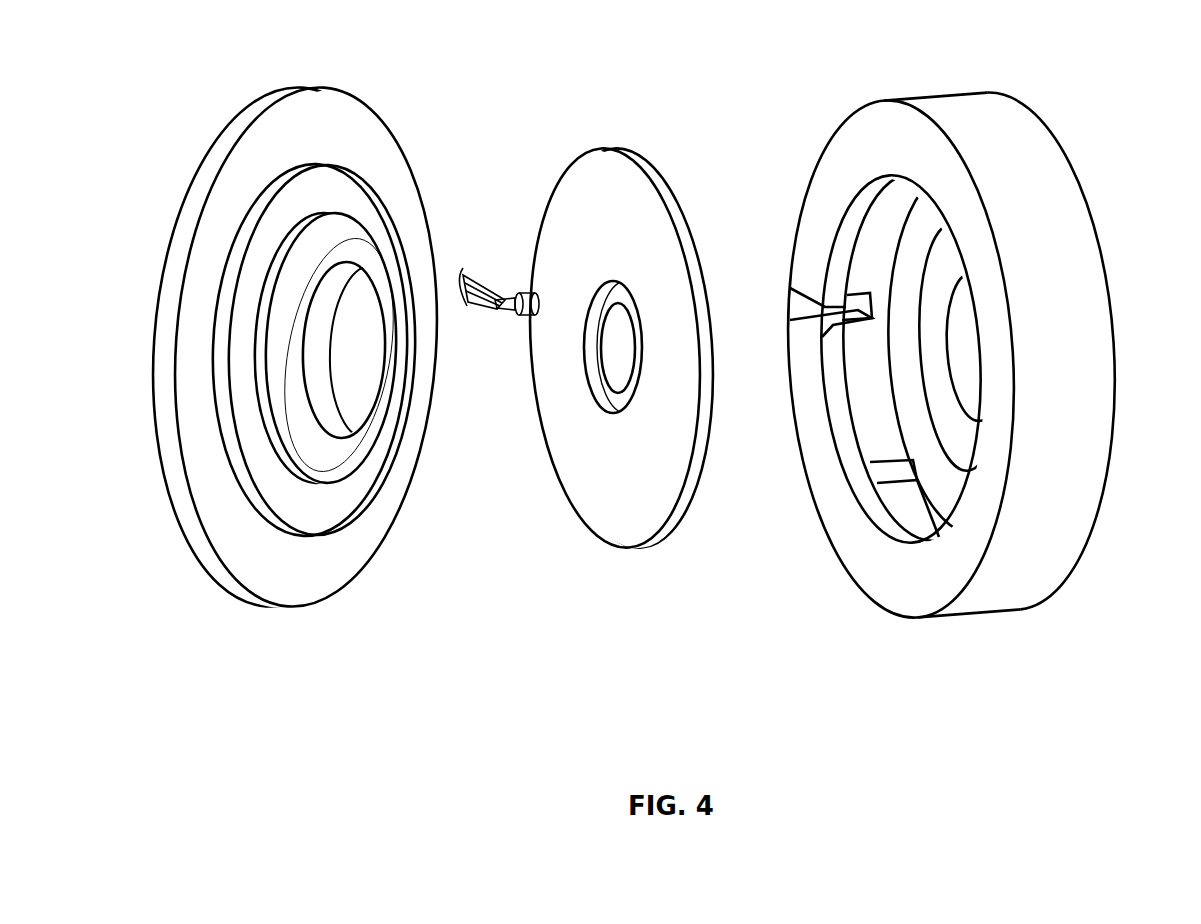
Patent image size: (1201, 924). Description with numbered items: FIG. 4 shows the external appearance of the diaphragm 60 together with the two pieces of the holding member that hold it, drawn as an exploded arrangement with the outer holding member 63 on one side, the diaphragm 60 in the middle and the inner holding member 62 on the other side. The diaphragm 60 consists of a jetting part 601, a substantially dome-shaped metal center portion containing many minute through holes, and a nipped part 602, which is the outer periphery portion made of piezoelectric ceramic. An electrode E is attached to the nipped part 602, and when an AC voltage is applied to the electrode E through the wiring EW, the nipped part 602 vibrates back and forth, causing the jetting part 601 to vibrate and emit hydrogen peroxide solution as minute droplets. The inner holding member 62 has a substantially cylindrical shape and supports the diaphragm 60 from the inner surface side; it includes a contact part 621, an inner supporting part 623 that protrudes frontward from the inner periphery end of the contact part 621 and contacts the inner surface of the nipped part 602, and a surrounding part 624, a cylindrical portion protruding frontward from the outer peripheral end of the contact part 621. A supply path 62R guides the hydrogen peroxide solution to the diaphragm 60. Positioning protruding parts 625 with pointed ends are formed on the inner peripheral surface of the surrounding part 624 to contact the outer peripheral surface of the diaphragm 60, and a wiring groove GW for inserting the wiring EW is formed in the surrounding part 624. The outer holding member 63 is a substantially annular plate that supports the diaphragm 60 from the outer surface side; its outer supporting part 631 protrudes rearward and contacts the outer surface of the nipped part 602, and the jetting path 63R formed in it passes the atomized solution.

The outer holding member 63 is at (363, 80).
The inner holding member 62 is at (943, 78).
The diaphragm 60 is at (605, 128).
The nipped part 602 is at (572, 185).
The jetting part 601 is at (617, 390).
The outer supporting part 631 is at (308, 453).
The jetting path 63R is at (350, 387).
The wiring EW is at (493, 286).
The electrode E is at (527, 318).
The contact part 621 is at (920, 208).
The surrounding part 624 is at (1068, 302).
The supply path 62R is at (968, 355).
The wiring groove GW is at (790, 303).
The inner supporting part 623 is at (922, 363).
The positioning protruding part 625 is at (898, 472).